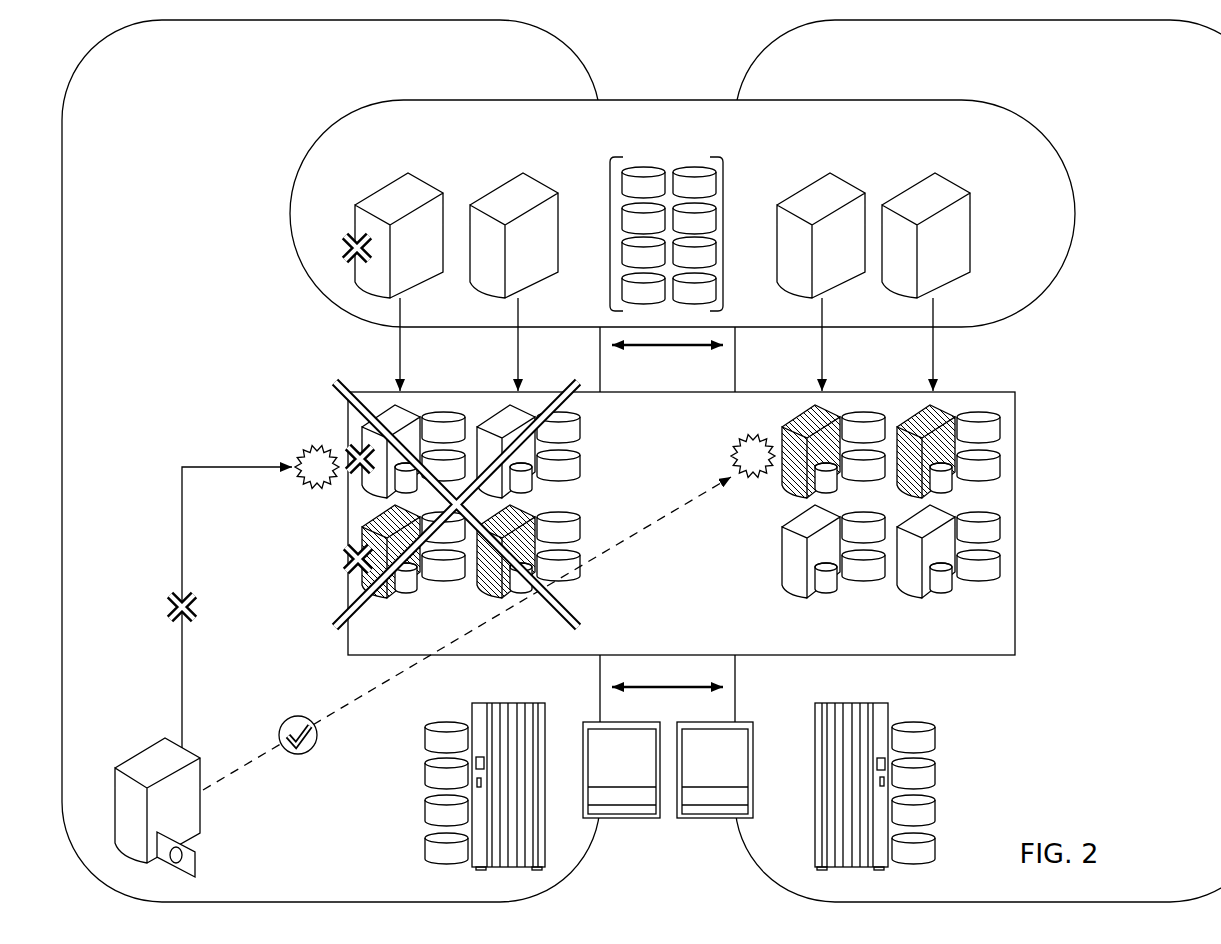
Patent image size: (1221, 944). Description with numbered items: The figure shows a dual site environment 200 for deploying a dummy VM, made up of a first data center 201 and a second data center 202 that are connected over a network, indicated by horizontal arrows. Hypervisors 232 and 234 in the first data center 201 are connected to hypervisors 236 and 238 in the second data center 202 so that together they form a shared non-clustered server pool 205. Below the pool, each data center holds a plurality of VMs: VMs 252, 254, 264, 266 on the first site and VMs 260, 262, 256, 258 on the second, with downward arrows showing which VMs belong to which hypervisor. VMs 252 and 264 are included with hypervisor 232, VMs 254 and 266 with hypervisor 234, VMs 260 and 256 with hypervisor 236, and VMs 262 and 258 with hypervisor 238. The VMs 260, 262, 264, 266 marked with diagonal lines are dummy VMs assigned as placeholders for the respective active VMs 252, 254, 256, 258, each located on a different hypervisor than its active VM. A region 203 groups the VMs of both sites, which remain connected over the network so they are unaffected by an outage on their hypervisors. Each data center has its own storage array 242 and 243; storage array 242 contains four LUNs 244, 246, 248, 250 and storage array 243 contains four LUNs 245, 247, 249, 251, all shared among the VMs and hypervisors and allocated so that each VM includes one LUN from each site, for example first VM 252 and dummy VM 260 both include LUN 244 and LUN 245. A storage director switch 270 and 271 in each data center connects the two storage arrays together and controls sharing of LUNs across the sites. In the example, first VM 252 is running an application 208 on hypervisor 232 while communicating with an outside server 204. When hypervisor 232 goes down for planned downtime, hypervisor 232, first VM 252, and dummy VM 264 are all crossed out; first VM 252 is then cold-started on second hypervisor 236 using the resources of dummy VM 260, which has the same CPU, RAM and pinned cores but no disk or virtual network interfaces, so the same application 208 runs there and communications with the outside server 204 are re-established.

The dual site environment 200 is at (668, 35).
The first data center 201 is at (331, 461).
The second data center 202 is at (978, 461).
The storage node cluster 203 is at (681, 523).
The outside server 204 is at (157, 807).
The non-clustered server pool 205 is at (682, 213).
The application 208 is at (300, 450).
The hypervisor 232 is at (394, 282).
The hypervisor 234 is at (514, 282).
The hypervisor 236 is at (821, 282).
The hypervisor 238 is at (926, 282).
The storage array 242 is at (508, 769).
The storage array 243 is at (851, 769).
The LUN 244 is at (653, 460).
The LUN 245 is at (678, 460).
The LUN 246 is at (712, 496).
The LUN 247 is at (768, 496).
The LUN 248 is at (653, 531).
The LUN 249 is at (678, 531).
The LUN 250 is at (712, 568).
The LUN 251 is at (768, 568).
The first VM 252 is at (380, 408).
The VM 254 is at (502, 408).
The VM 256 is at (797, 593).
The VM 258 is at (912, 593).
The dummy VM 260 is at (798, 416).
The dummy VM 262 is at (946, 416).
The dummy VM 264 is at (377, 592).
The dummy VM 266 is at (485, 595).
The storage director switch 270 is at (621, 770).
The storage director switch 271 is at (715, 770).